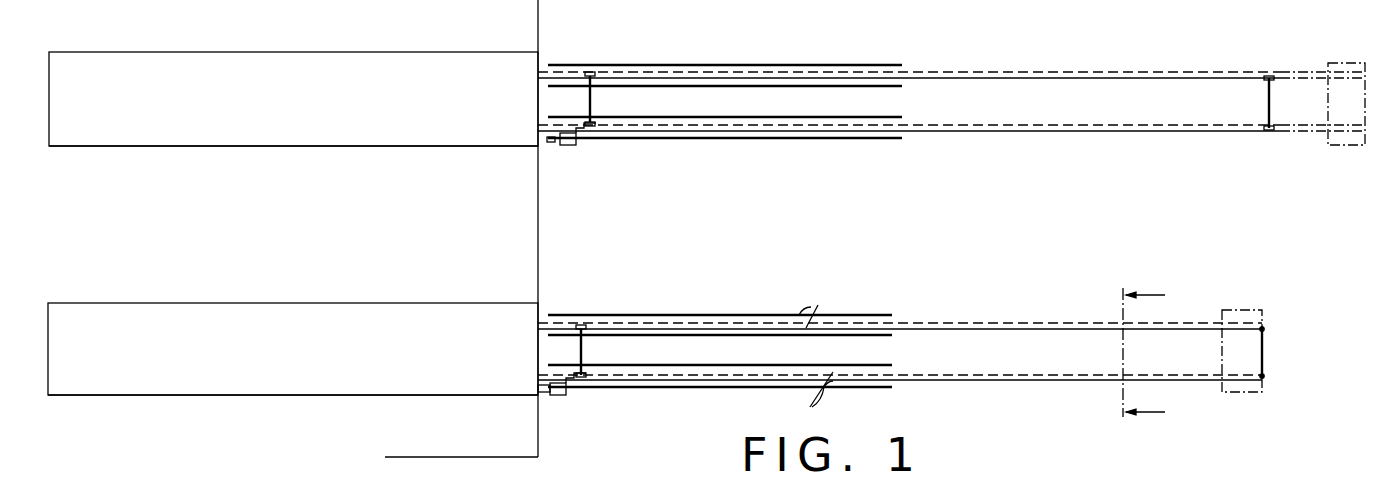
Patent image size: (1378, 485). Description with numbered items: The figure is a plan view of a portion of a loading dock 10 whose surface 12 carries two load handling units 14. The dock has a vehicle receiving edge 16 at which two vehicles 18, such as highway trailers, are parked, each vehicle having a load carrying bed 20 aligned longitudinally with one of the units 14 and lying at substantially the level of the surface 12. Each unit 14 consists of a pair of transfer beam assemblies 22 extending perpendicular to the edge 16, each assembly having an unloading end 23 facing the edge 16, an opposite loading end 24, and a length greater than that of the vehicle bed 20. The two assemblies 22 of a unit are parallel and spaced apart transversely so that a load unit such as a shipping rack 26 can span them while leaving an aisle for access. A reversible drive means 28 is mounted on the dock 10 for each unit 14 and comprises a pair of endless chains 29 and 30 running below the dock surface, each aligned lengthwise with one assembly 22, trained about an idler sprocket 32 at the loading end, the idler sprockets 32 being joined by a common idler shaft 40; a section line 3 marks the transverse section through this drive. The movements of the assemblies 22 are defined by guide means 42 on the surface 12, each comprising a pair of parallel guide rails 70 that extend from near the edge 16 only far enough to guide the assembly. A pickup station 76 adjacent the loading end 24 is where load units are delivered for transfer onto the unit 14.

The section line 3- 3 is at (1155, 353).
The loading dock 10 is at (526, 221).
The surface 12 is at (744, 238).
The load handling unit 14 is at (1074, 135).
The vehicle receiving edge 16 is at (538, 258).
The vehicle 18 is at (262, 150).
The load carrying bed 20 is at (446, 86).
The transfer beam assembly 22 is at (973, 68).
The unloading end 23 is at (588, 72).
The loading end 24 is at (1280, 363).
The shipping rack 26 is at (1332, 63).
The reversible drive means 28 is at (568, 152).
The endless chain 29 is at (1038, 377).
The endless chain 30 is at (1043, 322).
The idler sprocket 32 is at (1264, 324).
The idler shaft 40 is at (1266, 336).
The guide means 42 is at (826, 142).
The guide rail 70 is at (814, 352).
The pickup station 76 is at (1346, 147).